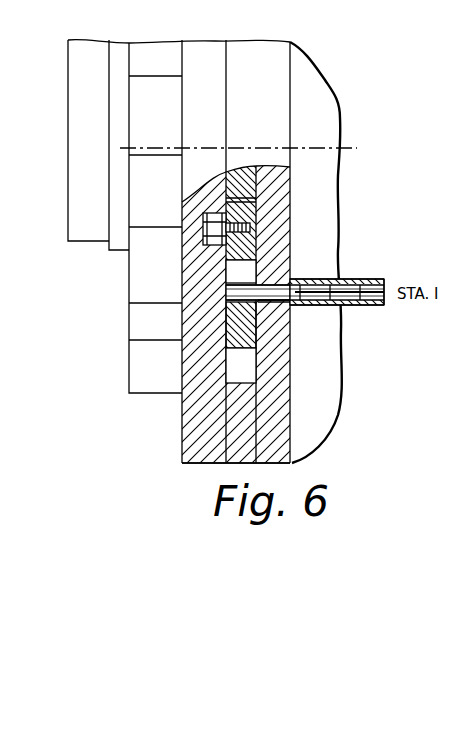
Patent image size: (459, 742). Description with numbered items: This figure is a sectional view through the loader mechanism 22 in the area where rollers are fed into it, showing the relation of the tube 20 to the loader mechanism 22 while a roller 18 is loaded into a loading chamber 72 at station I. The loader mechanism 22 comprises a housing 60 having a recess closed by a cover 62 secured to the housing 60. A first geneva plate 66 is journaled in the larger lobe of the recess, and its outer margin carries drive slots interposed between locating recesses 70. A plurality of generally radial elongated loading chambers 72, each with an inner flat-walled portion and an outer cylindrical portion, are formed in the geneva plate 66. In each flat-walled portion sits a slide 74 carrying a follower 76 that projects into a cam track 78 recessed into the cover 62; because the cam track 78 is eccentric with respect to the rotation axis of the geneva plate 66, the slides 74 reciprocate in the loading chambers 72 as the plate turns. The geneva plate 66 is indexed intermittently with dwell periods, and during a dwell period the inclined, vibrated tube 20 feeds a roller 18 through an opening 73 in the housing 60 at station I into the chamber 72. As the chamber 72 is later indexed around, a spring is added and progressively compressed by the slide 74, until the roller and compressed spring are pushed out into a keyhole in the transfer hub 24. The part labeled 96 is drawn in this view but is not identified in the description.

The pin 18 is at (228, 287).
The inner rod 20 is at (368, 308).
The body 22 is at (318, 84).
The left body section 24 is at (86, 143).
The block assembly 60 is at (275, 420).
The left block 62 is at (192, 428).
The lower insert 66 is at (233, 320).
The cavity 70 is at (238, 350).
The right block 72 is at (248, 272).
The pin bore 73 is at (277, 300).
The upper insert 74 is at (238, 213).
The screw 76 is at (210, 228).
The screw head 78 is at (205, 222).
The column section 96 is at (154, 65).